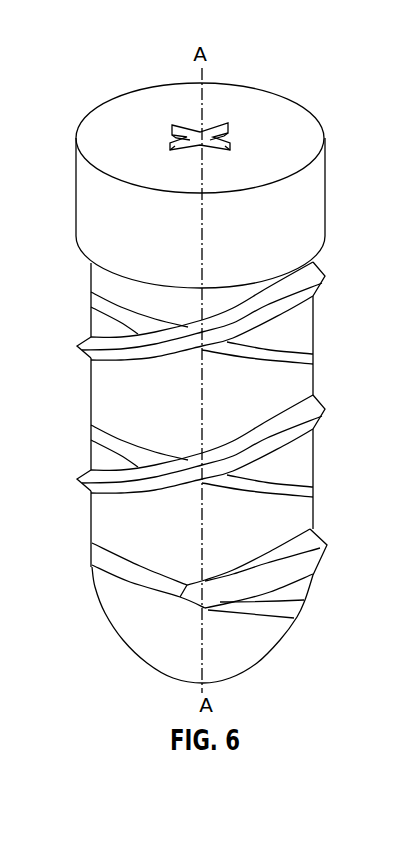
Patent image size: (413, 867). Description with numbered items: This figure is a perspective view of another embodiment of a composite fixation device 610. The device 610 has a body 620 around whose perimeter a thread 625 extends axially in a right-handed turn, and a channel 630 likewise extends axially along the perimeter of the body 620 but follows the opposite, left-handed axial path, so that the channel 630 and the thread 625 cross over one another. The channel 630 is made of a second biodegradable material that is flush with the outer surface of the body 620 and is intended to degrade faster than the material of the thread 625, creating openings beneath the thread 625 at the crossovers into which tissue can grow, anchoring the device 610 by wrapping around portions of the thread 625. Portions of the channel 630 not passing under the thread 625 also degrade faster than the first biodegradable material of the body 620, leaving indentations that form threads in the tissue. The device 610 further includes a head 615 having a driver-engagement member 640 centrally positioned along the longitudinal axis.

The composite fixation device 610 is at (100, 85).
The head 615 is at (325, 191).
The body 620 is at (314, 462).
The thread 625 is at (326, 277).
The channel 630 is at (306, 356).
The driver-engagement member 640 is at (224, 123).